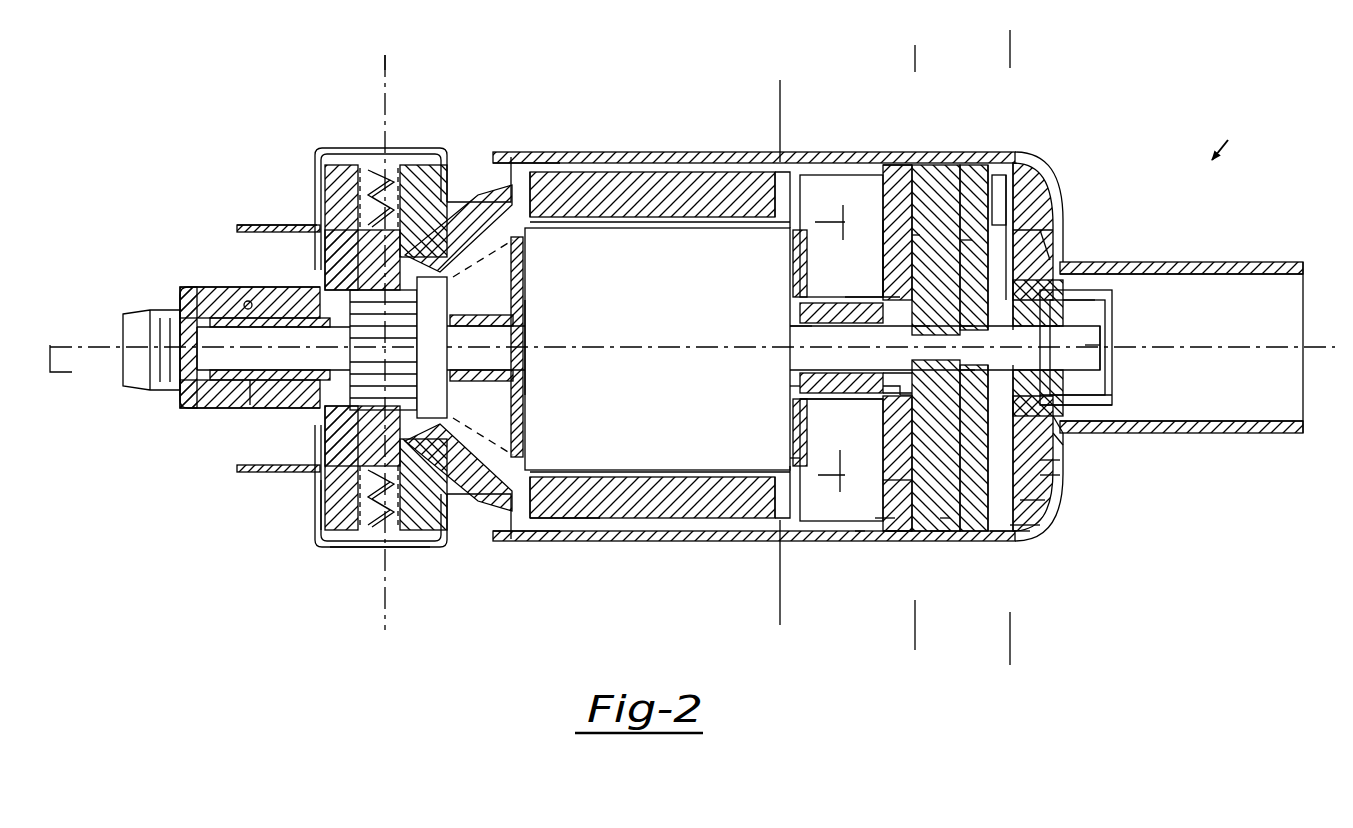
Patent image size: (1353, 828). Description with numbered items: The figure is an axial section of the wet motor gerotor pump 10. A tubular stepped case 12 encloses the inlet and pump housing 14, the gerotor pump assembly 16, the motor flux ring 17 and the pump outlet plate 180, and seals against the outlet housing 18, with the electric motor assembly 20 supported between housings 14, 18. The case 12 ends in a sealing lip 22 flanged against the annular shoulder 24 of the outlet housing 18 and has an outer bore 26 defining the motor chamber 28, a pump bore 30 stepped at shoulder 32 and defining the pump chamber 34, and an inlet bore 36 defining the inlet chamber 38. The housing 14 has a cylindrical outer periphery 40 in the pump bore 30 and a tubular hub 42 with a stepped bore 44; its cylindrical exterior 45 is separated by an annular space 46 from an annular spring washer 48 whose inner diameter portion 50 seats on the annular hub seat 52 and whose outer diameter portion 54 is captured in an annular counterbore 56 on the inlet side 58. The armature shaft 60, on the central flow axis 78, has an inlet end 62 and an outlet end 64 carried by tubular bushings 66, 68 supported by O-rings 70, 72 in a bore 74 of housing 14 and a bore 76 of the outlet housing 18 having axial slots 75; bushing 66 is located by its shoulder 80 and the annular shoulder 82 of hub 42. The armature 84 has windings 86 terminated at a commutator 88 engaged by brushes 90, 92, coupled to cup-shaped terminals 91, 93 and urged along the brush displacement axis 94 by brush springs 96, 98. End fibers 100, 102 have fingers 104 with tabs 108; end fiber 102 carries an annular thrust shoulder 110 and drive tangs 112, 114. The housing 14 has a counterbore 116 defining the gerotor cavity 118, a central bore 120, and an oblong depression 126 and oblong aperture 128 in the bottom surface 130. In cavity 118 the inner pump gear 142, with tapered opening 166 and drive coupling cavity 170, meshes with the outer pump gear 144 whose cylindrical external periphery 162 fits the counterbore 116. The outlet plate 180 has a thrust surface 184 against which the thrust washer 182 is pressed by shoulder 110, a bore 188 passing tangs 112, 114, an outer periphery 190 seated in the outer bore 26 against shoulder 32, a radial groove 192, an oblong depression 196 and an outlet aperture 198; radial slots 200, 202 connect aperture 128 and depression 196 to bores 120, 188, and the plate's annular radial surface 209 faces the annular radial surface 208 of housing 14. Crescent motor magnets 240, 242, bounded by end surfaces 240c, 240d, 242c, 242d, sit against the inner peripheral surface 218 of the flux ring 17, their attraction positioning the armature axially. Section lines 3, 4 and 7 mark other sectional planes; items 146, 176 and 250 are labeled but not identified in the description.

The wet motor gerotor pump assembly 10 is at (1225, 138).
The tubular stepped case 12 is at (1282, 262).
The inlet and pump housing 14 is at (1050, 185).
The gerotor pump assembly 16 is at (820, 158).
The motor flux ring 17 is at (672, 158).
The outlet housing 18 is at (218, 276).
The electric motor assembly 20 is at (612, 269).
The sealing lip 22 is at (490, 198).
The annular shoulder 24 is at (496, 162).
The outer bore 26 is at (568, 160).
The motor chamber 28 is at (652, 357).
The pump bore 30 is at (1012, 185).
The shoulder 32 is at (940, 195).
The pump chamber 34 is at (998, 215).
The inlet bore 36 is at (1228, 272).
The inlet chamber 38 is at (1283, 312).
The cylindrical outer periphery 40 is at (935, 536).
The tubular hub 42 is at (1110, 392).
The stepped bore 44 is at (1112, 380).
The cylindrical exterior 45 is at (1112, 402).
The annular space 46 is at (1100, 432).
The annular spring washer 48 is at (1047, 500).
The inner diameter portion 50 is at (1068, 440).
The annular hub seat 52 is at (1062, 462).
The outer diameter portion 54 is at (1042, 522).
The annular counterbore 56 is at (1030, 536).
The inlet side 58 is at (1000, 540).
The armature shaft 60 is at (790, 330).
The armature shaft inlet end 62 is at (1102, 340).
The armature shaft outlet end 64 is at (192, 400).
The tubular bushing 66 is at (1110, 312).
The tubular bushing 68 is at (240, 383).
The O-ring 70 is at (1047, 255).
The O-ring 72 is at (270, 400).
The bore 74 is at (1096, 300).
The axial slots 75 is at (252, 302).
The bore 76 is at (262, 388).
The central flow axis 78 is at (67, 369).
The shoulder 80 is at (1052, 290).
The annular shoulder 82 is at (1040, 232).
The armature 84 is at (518, 533).
The armature windings 86 is at (500, 419).
The commutator 88 is at (398, 389).
The commutator brush 90 is at (322, 205).
The cup-shaped terminal 91 is at (243, 472).
The commutator brush 92 is at (322, 498).
The cup-shaped terminal 93 is at (250, 225).
The brush displacement axis 94 is at (387, 70).
The first brush spring 96 is at (348, 546).
The second brush spring 98 is at (372, 150).
The first end fiber 100 is at (526, 393).
The second end fiber 102 is at (800, 372).
The fingers 104 is at (820, 402).
The axially extending tab 108 is at (790, 458).
The annular thrust shoulder 110 is at (885, 390).
The drive tang 112 is at (930, 338).
The drive tang 114 is at (975, 355).
The counterbore 116 is at (890, 536).
The gerotor cavity 118 is at (905, 276).
The central bore 120 is at (1062, 477).
The oblong depression 126 is at (985, 200).
The oblong aperture 128 is at (840, 478).
The bottom surface 130 is at (1012, 282).
The inner pump gear 142 is at (843, 240).
The outer pump gear 144 is at (918, 235).
The plate 146 is at (900, 205).
The cylindrical external periphery 162 is at (962, 225).
The tapered opening 166 is at (975, 335).
The drive coupling cavity 170 is at (798, 300).
The shaft 176 is at (930, 326).
The pump outlet plate 180 is at (900, 170).
The thrust washer 182 is at (805, 390).
The annular thrust surface 184 is at (920, 402).
The bore 188 is at (815, 344).
The cylindrical outer periphery 190 is at (890, 540).
The annular radial groove 192 is at (860, 540).
The oblong depression 196 is at (910, 440).
The outlet aperture 198 is at (879, 243).
The radial slot 200 is at (1086, 350).
The radial slot 202 is at (1060, 330).
The annular radial surface 208 is at (945, 540).
The annular radial surface 209 is at (880, 540).
The inner peripheral surface 218 is at (565, 512).
The motor magnet 240 is at (593, 182).
The end surface 240c is at (772, 218).
The end surface 240d is at (530, 172).
The motor magnet 242 is at (628, 512).
The end surface 242c is at (780, 520).
The end surface 242d is at (482, 532).
The shaft end 250 is at (135, 310).
The section line 3 is at (913, 58).
The section line 4 is at (1012, 42).
The section line 7 is at (778, 97).